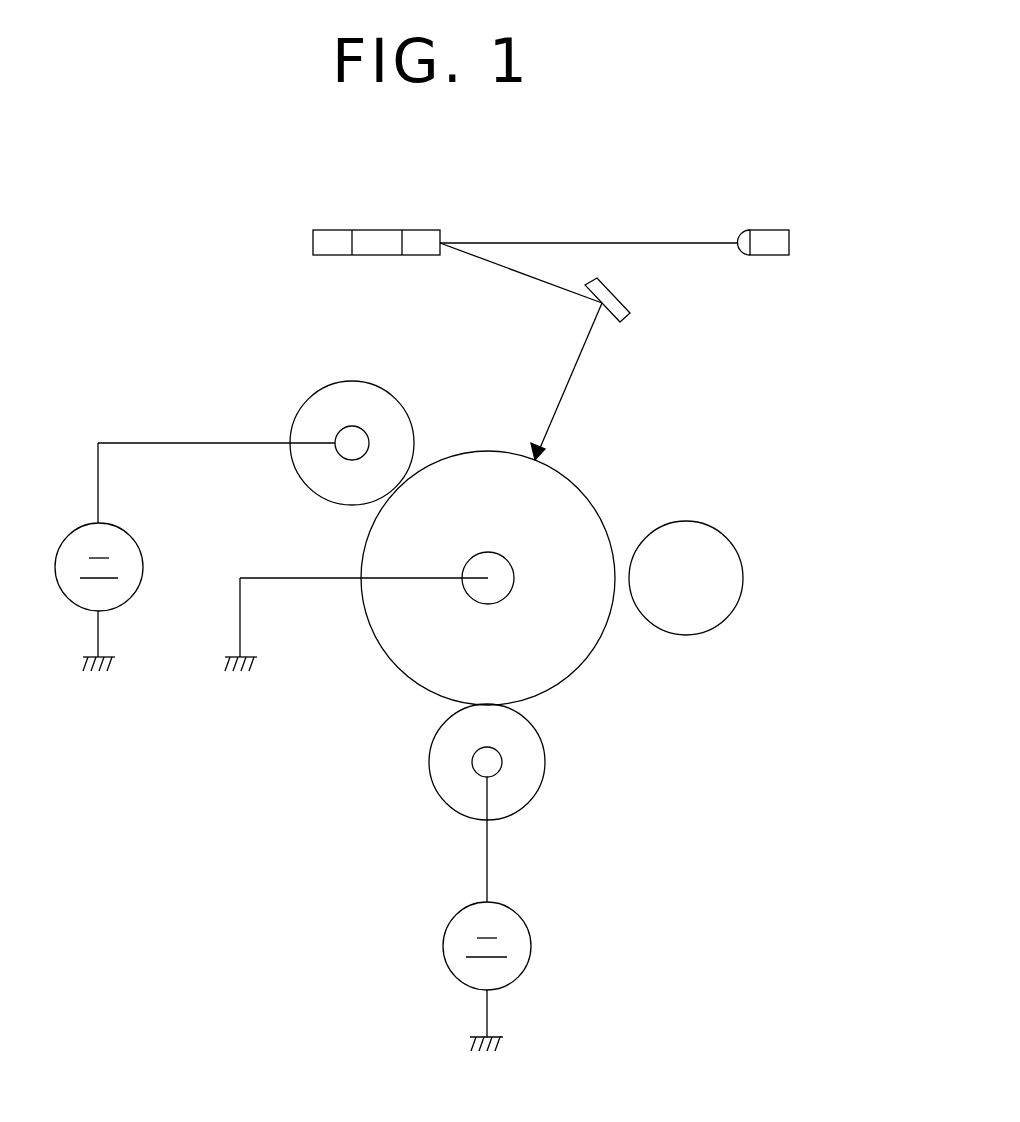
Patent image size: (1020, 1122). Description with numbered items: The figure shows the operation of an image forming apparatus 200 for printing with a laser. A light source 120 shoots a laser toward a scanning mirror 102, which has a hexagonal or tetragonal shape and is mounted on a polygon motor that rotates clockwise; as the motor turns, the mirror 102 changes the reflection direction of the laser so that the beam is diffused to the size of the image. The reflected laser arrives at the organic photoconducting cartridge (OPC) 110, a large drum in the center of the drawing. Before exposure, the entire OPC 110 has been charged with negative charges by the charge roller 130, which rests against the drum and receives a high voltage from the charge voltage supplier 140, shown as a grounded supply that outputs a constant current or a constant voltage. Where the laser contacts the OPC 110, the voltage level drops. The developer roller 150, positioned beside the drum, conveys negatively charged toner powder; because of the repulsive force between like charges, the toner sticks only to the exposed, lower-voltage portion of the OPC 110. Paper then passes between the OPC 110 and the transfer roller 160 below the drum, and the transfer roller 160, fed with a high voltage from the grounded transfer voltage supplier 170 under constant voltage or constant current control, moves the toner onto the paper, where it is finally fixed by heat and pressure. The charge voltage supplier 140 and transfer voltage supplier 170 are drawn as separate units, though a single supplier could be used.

The image forming apparatus 200 is at (378, 151).
The scanning mirror 102 is at (612, 290).
The organic photoconducting cartridge (OPC) 110 is at (487, 450).
The light source 120 is at (764, 229).
The charge roller 130 is at (352, 380).
The charge voltage supplier 140 is at (144, 567).
The developer roller 150 is at (686, 520).
The transfer roller 160 is at (546, 762).
The transfer voltage supplier 170 is at (532, 945).